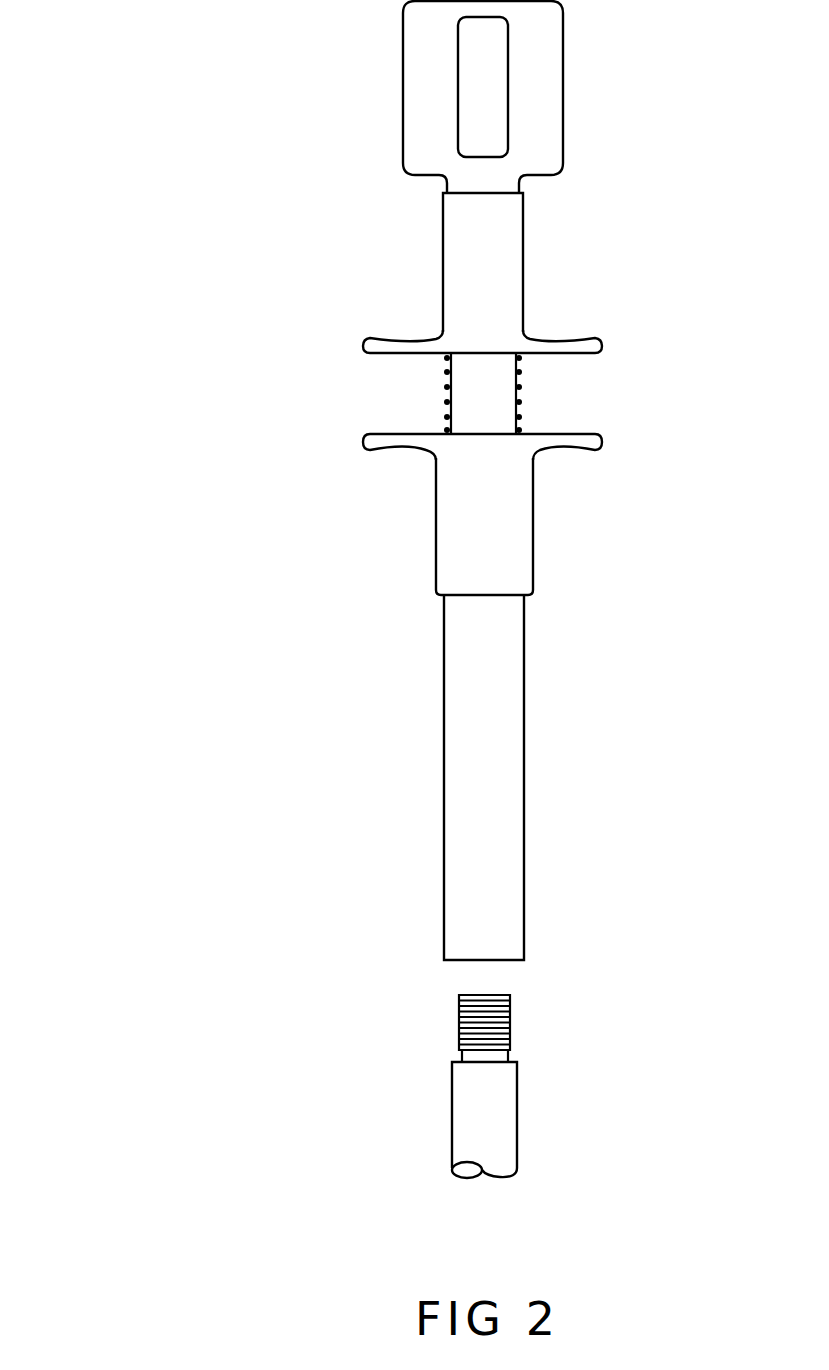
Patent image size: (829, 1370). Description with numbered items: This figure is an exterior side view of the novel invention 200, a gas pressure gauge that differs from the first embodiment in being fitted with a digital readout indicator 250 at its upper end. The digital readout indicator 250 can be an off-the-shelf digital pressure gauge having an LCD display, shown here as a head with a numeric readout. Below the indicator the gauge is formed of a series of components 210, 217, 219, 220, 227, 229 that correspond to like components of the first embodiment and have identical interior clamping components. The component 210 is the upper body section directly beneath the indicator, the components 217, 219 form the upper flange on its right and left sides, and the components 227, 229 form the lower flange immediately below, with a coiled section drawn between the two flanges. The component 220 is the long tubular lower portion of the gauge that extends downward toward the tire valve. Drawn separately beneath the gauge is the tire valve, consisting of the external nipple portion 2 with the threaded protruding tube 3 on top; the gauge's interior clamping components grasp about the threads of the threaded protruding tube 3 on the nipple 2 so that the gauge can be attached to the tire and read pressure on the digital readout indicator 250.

The novel invention 200 is at (200, 60).
The digital readout indicator 250 is at (562, 87).
The component corresponding to component 10 210 is at (520, 190).
The component corresponding to component 17 217 is at (605, 343).
The component corresponding to component 19 219 is at (363, 345).
The component corresponding to component 27 227 is at (605, 442).
The component corresponding to component 29 229 is at (363, 440).
The component corresponding to component 20 220 is at (524, 775).
The threaded protruding tube 3 is at (508, 1028).
The external nipple portion 2 is at (517, 1113).